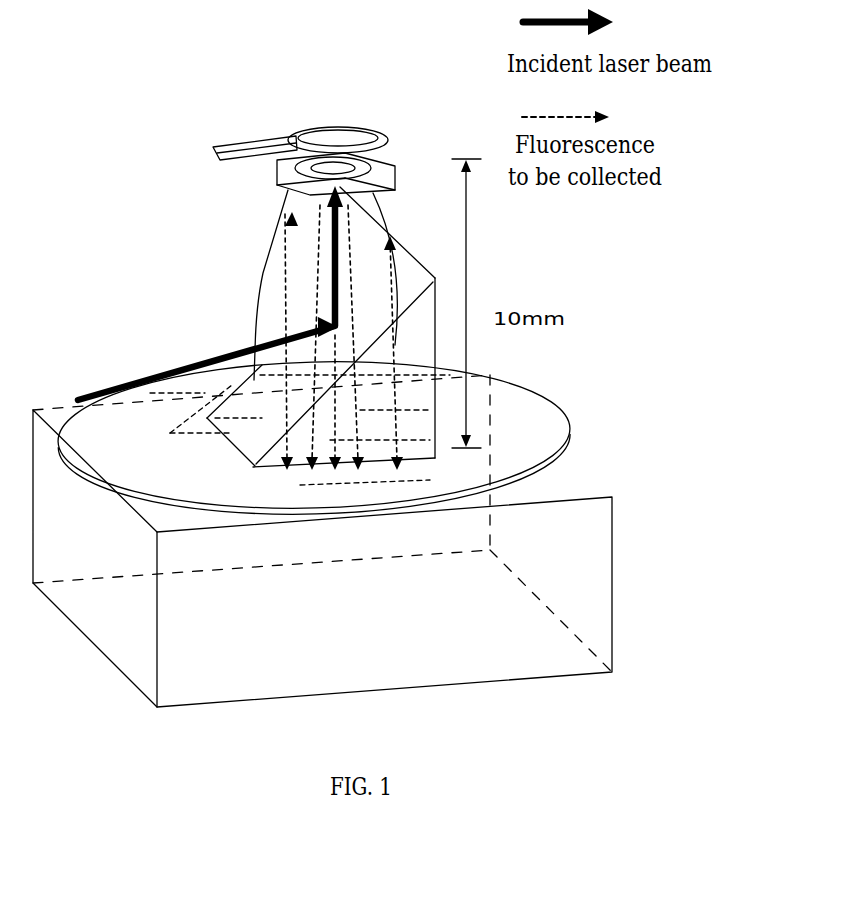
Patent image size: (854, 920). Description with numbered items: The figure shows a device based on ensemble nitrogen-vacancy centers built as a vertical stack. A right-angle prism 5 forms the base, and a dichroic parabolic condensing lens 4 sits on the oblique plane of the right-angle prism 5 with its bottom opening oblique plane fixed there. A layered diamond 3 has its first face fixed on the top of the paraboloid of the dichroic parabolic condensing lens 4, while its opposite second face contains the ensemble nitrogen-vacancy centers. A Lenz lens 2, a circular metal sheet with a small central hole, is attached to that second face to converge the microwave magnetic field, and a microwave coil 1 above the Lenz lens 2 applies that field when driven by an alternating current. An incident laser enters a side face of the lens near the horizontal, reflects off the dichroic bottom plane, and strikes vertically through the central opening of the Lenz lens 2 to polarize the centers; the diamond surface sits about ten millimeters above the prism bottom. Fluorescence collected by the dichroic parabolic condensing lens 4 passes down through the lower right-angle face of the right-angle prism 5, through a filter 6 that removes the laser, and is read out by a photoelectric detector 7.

The microwave coil 1 is at (240, 145).
The Lenz lens 2 is at (290, 173).
The diamond 3 is at (300, 180).
The dichroic parabolic condensing lens 4 is at (263, 298).
The right-angle prism 5 is at (187, 372).
The filter 6 is at (517, 448).
The photoelectric detector 7 is at (572, 493).